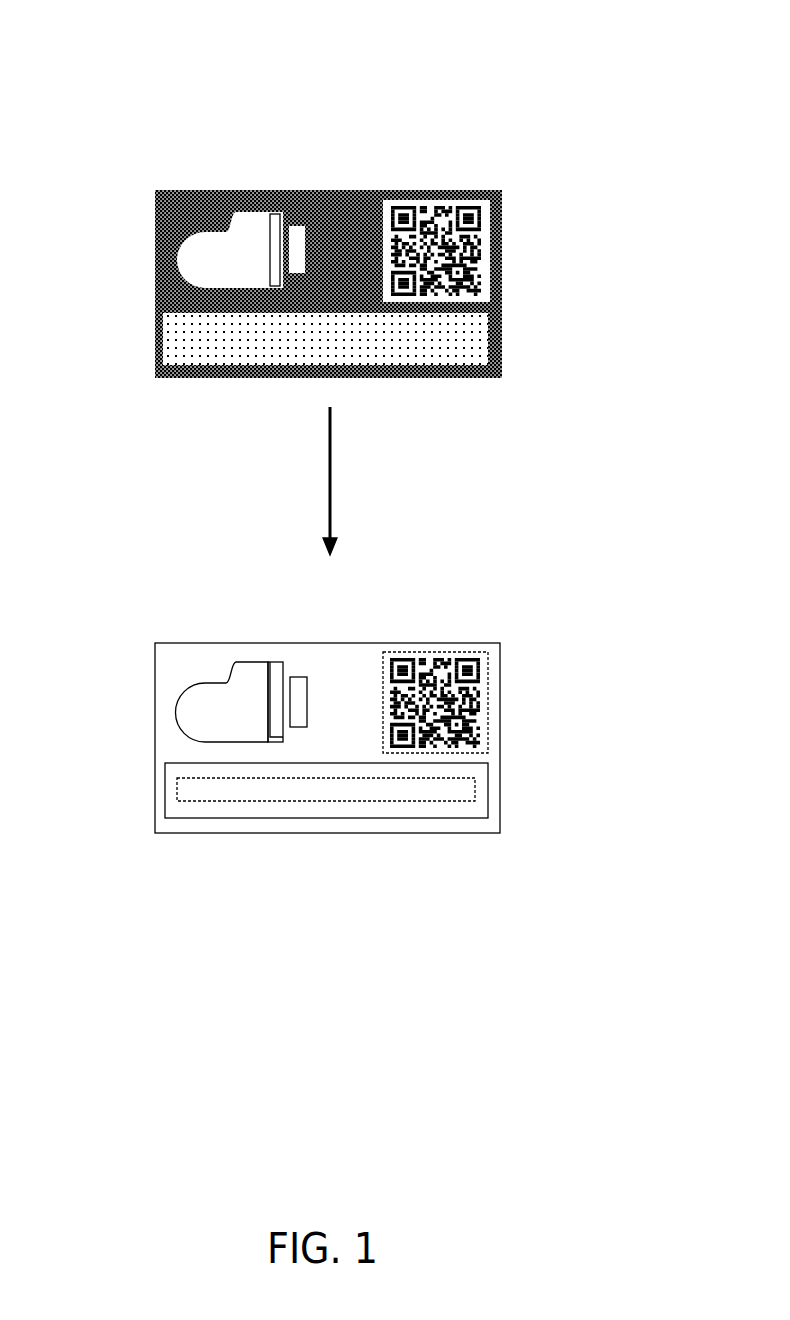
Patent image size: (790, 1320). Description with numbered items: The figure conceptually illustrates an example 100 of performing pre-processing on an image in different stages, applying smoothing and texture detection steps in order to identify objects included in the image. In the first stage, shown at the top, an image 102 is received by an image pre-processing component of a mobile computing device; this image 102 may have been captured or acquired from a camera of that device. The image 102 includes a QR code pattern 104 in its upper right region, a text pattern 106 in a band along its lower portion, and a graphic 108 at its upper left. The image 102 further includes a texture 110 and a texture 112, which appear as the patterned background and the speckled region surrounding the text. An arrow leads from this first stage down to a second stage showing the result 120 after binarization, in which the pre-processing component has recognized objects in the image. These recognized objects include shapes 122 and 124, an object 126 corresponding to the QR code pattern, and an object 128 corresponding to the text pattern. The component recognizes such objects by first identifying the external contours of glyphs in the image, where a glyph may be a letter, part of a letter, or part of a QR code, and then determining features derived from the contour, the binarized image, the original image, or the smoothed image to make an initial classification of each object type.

The example 100 is at (673, 98).
The image 102 is at (154, 222).
The QR code pattern 104 is at (482, 268).
The text pattern 106 is at (472, 338).
The graphic 108 is at (197, 263).
The texture 110 is at (160, 293).
The texture 112 is at (182, 350).
The vectorized label 120 is at (153, 663).
The shape 122 is at (274, 683).
The shape 124 is at (302, 693).
The object corresponding to a QR code pattern 126 is at (440, 652).
The object corresponding to a text pattern 128 is at (415, 802).